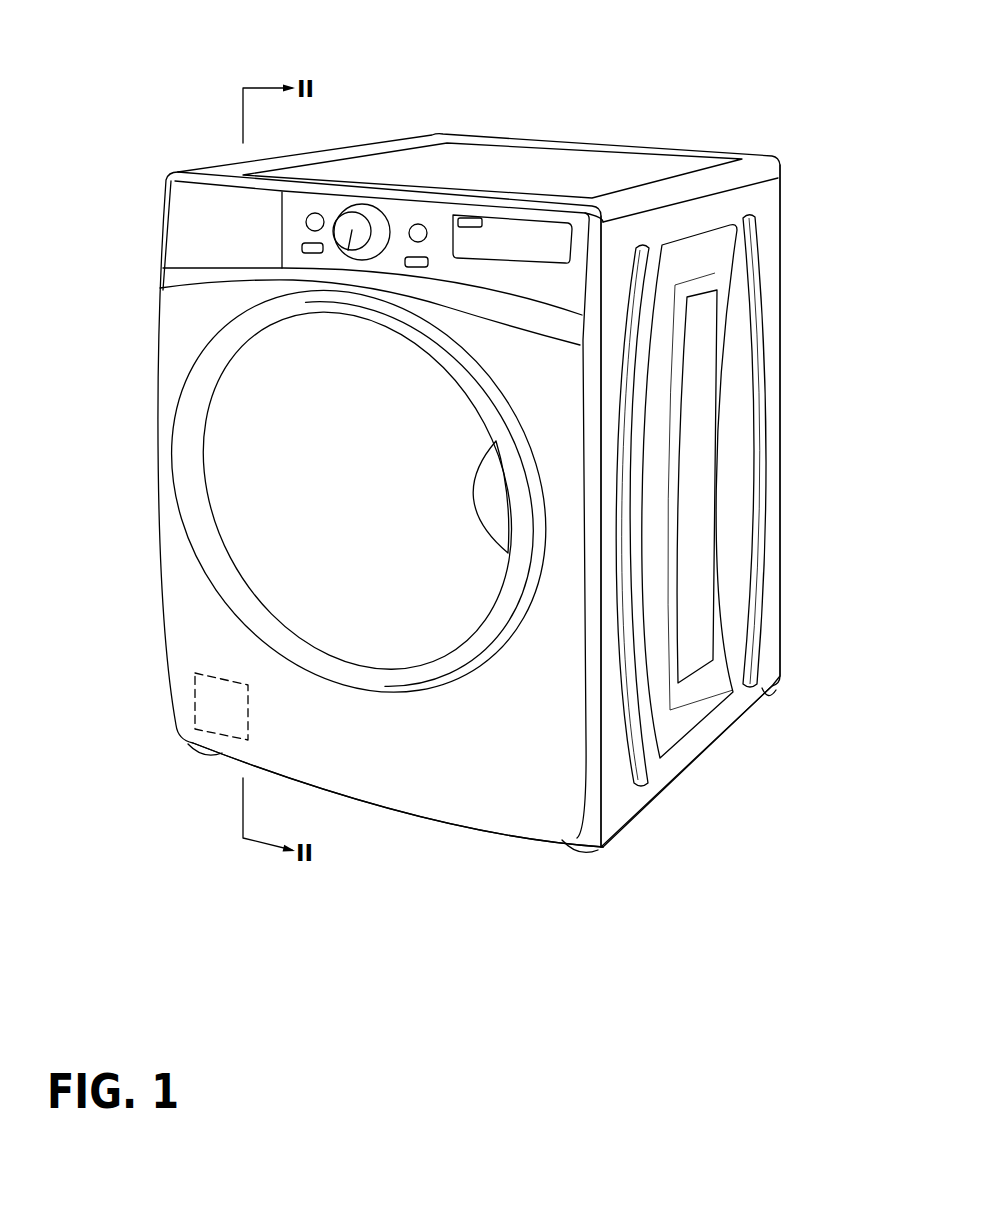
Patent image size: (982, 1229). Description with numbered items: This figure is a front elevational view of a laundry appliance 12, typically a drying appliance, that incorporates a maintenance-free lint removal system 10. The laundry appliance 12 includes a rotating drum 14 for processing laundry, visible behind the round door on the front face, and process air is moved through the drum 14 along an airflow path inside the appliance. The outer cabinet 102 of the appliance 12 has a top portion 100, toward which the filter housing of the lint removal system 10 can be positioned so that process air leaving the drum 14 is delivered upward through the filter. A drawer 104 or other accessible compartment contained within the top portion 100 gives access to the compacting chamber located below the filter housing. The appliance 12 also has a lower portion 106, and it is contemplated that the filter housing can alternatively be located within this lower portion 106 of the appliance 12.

The lint removal system 10 is at (180, 710).
The laundry appliance 12 is at (485, 110).
The rotating drum 14 is at (283, 453).
The top portion 100 is at (402, 165).
The cabinet 102 is at (755, 200).
The drawer 104 is at (207, 233).
The lower portion 106 is at (382, 807).